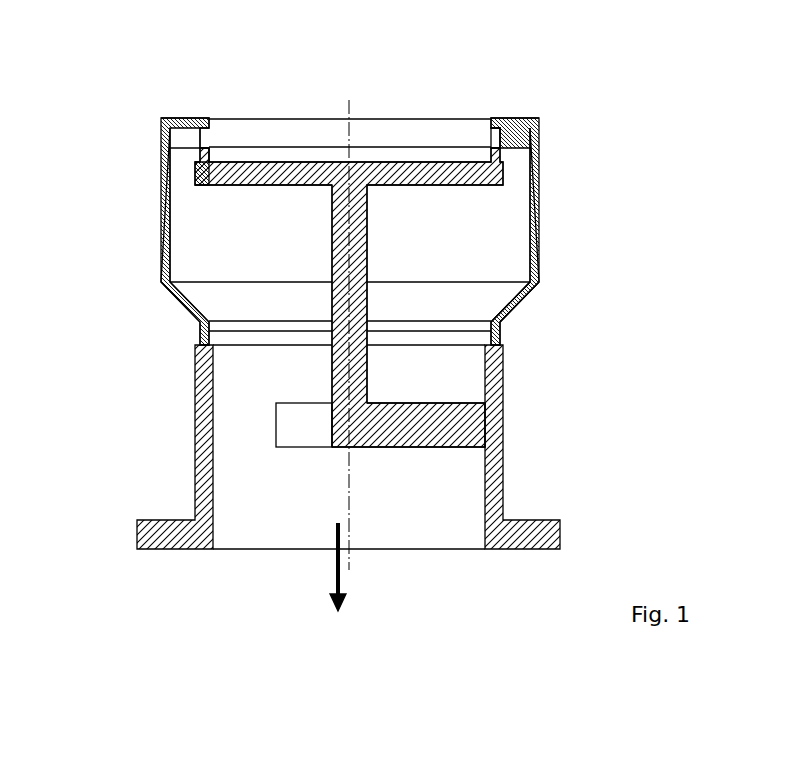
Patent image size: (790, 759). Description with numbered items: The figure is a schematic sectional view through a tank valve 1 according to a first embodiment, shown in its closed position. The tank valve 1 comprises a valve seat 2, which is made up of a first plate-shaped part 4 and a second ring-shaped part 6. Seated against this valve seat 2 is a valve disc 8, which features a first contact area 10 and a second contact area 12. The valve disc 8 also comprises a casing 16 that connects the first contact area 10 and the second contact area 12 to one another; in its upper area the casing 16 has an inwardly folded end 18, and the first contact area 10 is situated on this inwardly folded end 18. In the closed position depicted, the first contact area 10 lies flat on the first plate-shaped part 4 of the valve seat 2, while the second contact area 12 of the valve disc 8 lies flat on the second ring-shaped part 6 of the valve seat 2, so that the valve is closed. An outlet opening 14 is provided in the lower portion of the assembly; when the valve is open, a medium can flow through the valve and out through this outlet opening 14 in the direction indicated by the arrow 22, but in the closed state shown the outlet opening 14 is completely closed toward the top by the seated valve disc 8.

The tank valve 1 is at (570, 188).
The valve seat 2 is at (494, 406).
The first plate-shaped part 4 is at (372, 180).
The second ring-shaped part 6 is at (497, 333).
The valve disc 8 is at (541, 247).
The first contact area 10 is at (492, 148).
The second contact area 12 is at (503, 303).
The outlet opening 14 is at (425, 547).
The casing 16 is at (163, 178).
The inwardly folded end 18 is at (189, 110).
The arrow 22 is at (335, 570).